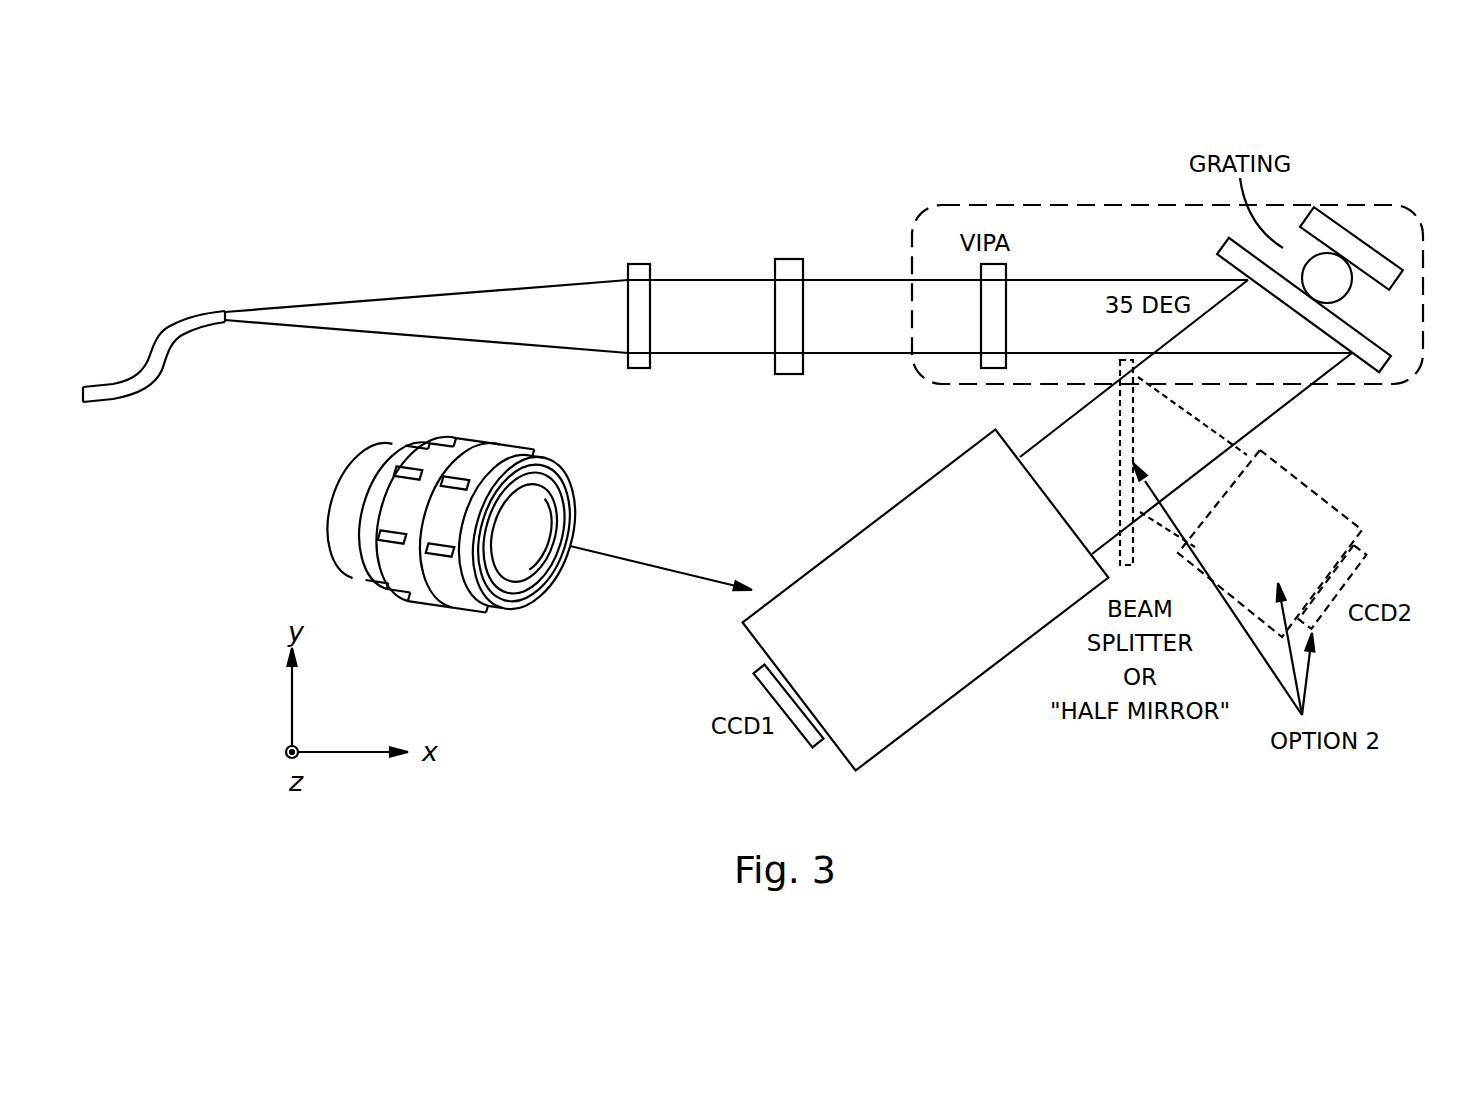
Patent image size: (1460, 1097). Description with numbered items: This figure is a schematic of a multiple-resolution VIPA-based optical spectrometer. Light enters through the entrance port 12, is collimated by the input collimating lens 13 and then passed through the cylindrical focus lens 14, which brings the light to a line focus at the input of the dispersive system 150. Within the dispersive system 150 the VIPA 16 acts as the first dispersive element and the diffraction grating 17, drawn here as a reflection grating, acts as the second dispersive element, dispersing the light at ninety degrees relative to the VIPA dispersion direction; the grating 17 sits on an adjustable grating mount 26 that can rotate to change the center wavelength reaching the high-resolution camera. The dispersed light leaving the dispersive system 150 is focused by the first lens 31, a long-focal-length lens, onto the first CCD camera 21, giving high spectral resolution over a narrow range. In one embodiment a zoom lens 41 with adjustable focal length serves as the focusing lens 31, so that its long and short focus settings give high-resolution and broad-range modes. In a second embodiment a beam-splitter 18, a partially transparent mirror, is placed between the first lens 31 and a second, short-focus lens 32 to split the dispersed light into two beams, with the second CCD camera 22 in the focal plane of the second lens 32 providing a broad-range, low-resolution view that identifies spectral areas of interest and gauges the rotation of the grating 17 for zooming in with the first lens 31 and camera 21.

The entrance port 12 is at (157, 335).
The input collimating lens 13 is at (638, 263).
The cylindrical focus lens 14 is at (789, 258).
The dispersive system 150 is at (997, 203).
The VIPA 16 is at (1003, 268).
The diffraction grating 17 is at (1228, 250).
The adjustable grating mount 26 is at (1355, 238).
The beam-splitter 18 is at (1120, 408).
The first lens 31 is at (985, 673).
The first CCD camera 21 is at (762, 692).
The second lens 32 is at (1312, 490).
The second CCD camera 22 is at (1363, 553).
The zoom lens 41 is at (332, 473).